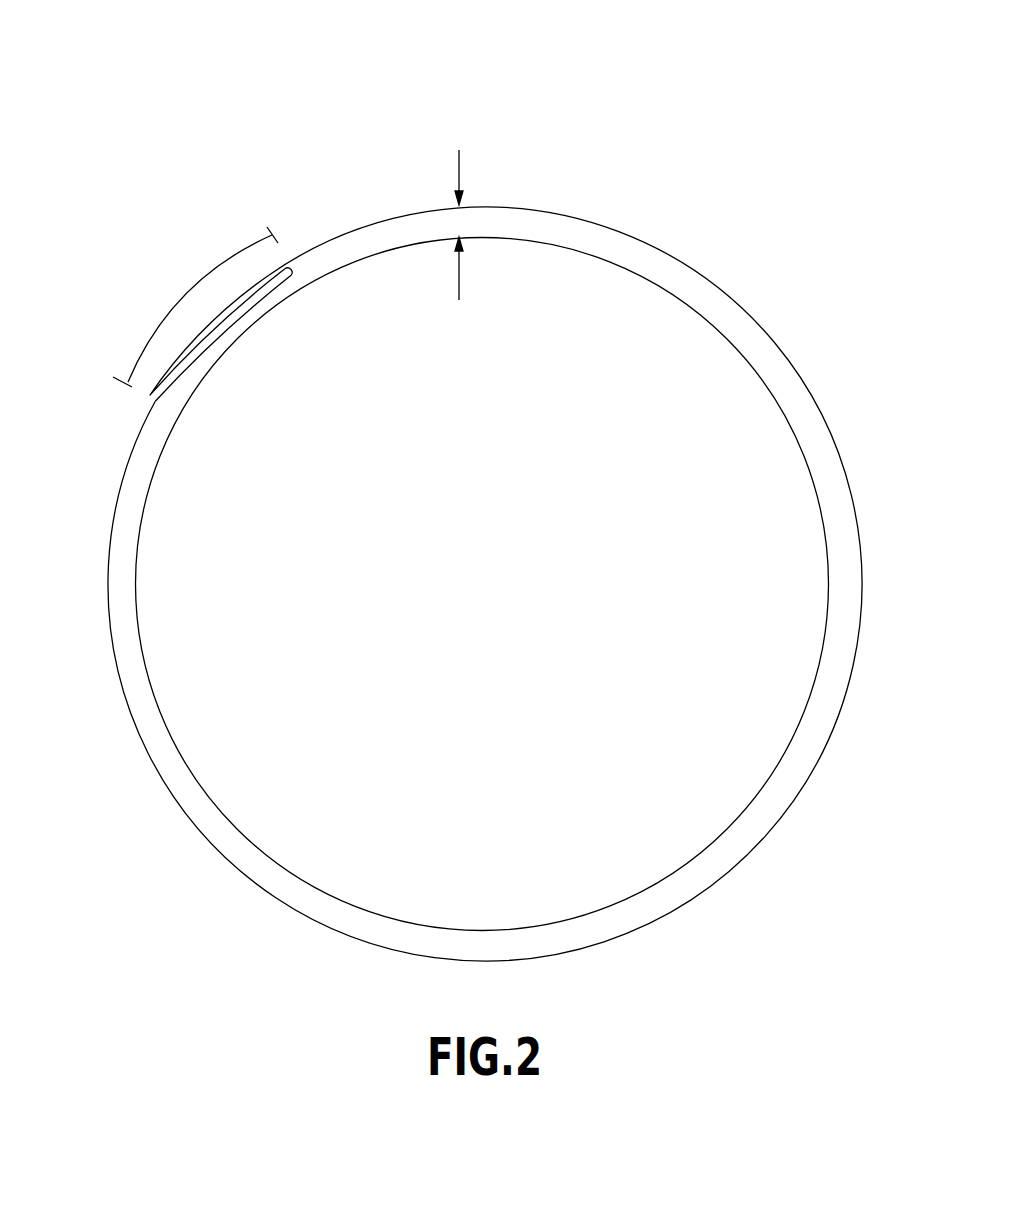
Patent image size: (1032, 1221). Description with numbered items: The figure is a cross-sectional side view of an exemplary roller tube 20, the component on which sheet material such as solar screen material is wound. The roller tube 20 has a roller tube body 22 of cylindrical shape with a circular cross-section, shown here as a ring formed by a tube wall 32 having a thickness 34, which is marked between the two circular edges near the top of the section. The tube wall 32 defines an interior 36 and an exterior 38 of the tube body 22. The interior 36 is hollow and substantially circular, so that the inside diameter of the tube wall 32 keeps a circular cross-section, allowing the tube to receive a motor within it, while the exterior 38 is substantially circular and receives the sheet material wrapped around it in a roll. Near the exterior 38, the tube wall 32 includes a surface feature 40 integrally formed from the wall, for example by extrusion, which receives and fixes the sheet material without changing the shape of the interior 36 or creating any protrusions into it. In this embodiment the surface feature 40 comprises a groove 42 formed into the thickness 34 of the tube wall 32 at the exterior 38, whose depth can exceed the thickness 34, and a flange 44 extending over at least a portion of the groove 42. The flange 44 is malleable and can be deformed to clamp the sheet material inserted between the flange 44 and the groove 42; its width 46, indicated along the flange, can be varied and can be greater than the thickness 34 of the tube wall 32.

The roller tube 20 is at (628, 110).
The roller tube body 22 is at (483, 584).
The tube wall 32 is at (132, 738).
The thickness 34 is at (456, 216).
The interior 36 is at (470, 584).
The exterior 38 is at (890, 589).
The surface feature 40 is at (163, 338).
The groove 42 is at (138, 421).
The flange 44 is at (146, 398).
The width 46 is at (199, 283).